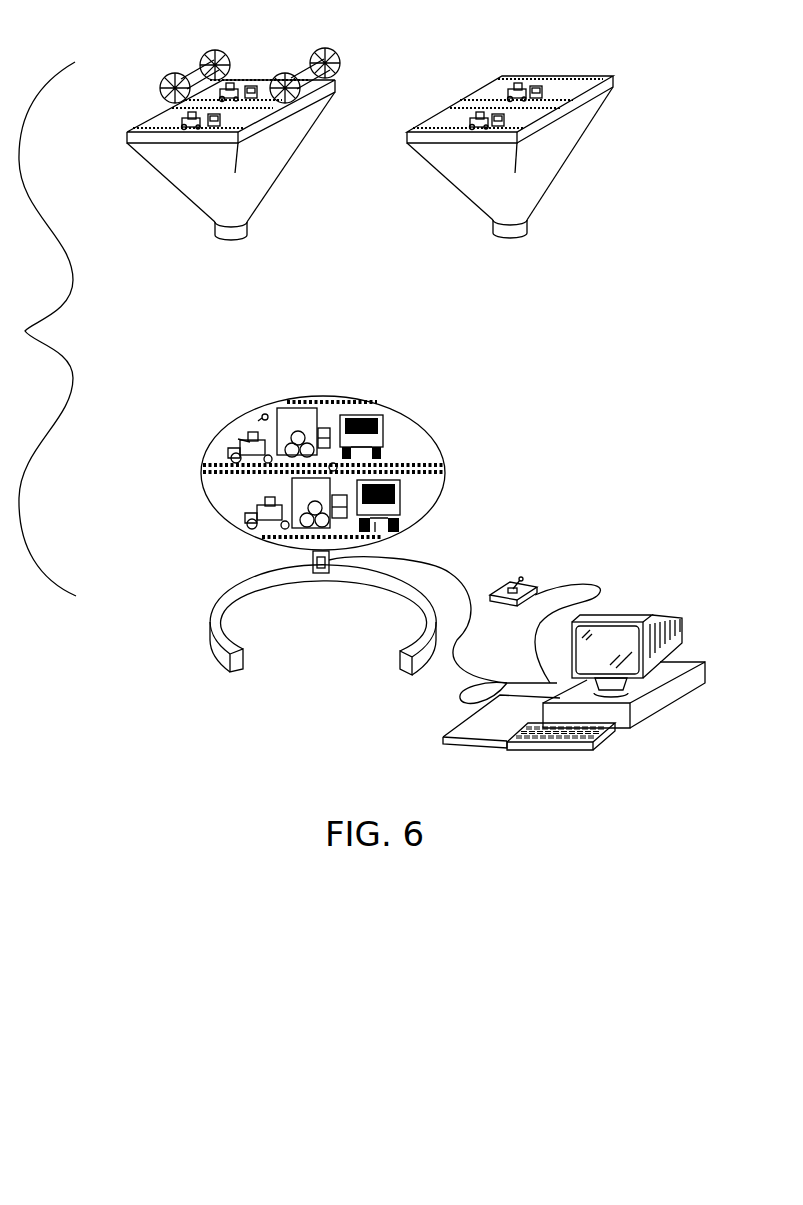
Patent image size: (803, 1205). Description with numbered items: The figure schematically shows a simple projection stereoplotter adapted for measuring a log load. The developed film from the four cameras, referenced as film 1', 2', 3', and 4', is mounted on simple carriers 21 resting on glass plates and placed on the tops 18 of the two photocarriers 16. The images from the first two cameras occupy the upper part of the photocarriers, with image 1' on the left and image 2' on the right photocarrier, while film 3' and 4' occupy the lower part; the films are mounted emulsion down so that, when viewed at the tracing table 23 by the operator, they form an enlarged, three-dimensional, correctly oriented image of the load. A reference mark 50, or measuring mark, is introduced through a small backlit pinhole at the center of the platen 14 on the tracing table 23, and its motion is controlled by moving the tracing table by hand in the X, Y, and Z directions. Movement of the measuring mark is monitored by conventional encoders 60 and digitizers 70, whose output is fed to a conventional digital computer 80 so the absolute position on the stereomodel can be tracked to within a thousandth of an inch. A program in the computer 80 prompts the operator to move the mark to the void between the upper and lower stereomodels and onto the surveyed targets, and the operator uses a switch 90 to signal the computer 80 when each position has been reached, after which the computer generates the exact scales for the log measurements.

The platen 14 is at (208, 505).
The photocarriers 16 is at (438, 178).
The tops of the photocarriers 18 is at (498, 76).
The carriers 21 is at (328, 48).
The film 1' is at (531, 71).
The film 2' is at (247, 71).
The film 3' is at (185, 113).
The film 4' is at (530, 111).
The tracing table 23 is at (238, 583).
The reference mark 50 is at (338, 465).
The encoders 60 is at (330, 562).
The digitizers 70 is at (465, 745).
The digital computer 80 is at (680, 705).
The switch 90 is at (532, 580).